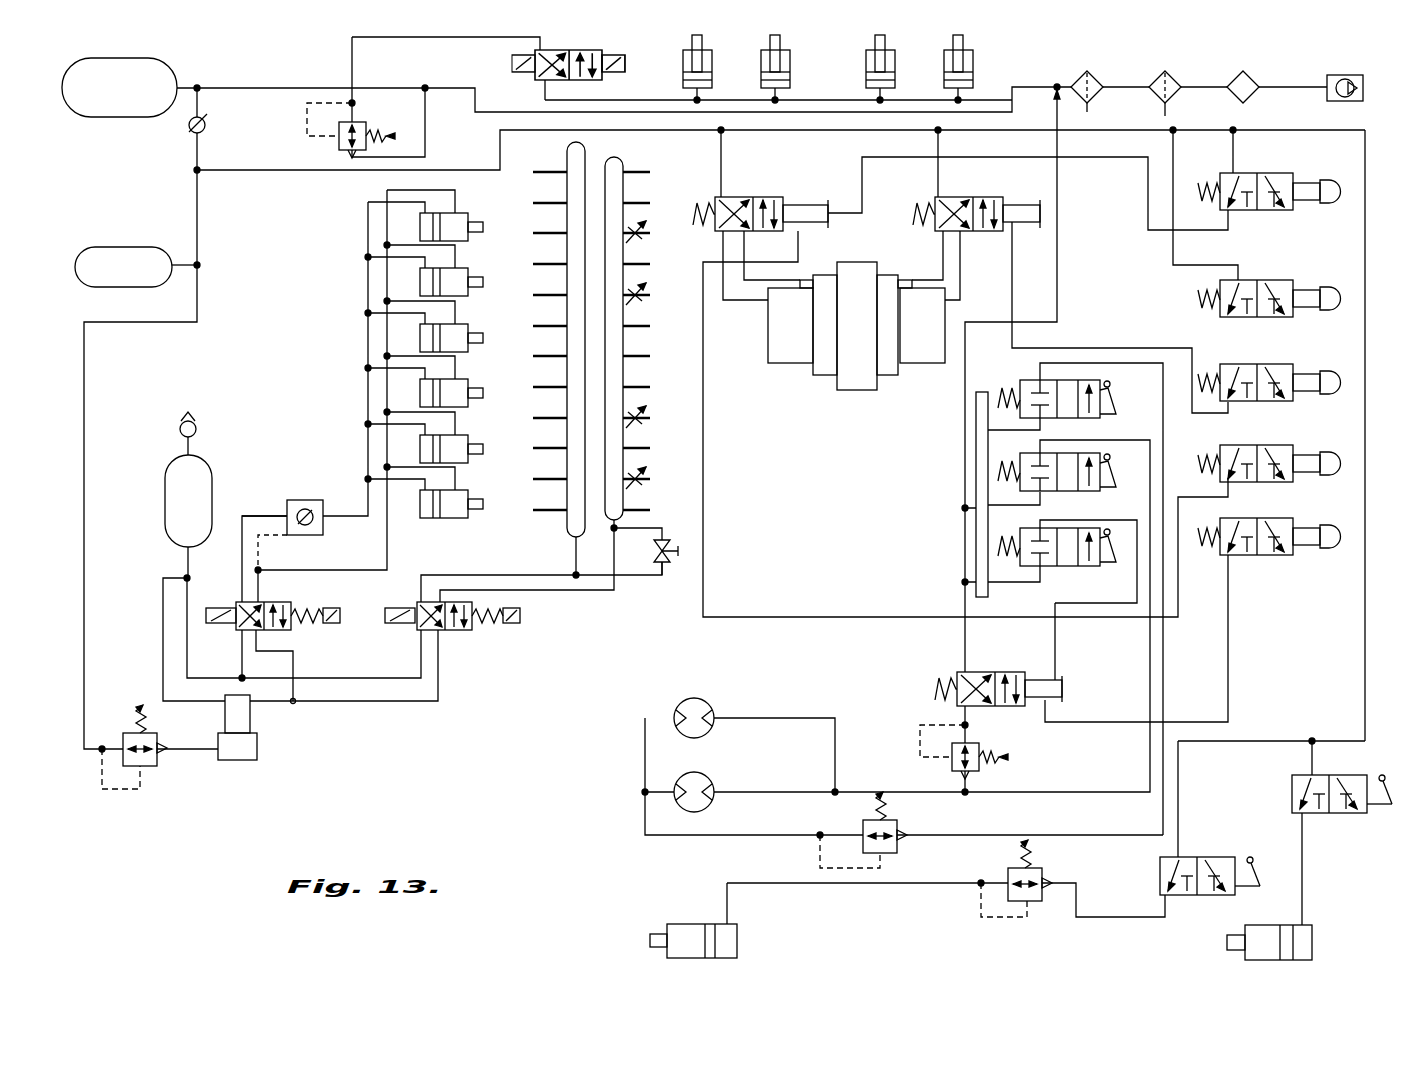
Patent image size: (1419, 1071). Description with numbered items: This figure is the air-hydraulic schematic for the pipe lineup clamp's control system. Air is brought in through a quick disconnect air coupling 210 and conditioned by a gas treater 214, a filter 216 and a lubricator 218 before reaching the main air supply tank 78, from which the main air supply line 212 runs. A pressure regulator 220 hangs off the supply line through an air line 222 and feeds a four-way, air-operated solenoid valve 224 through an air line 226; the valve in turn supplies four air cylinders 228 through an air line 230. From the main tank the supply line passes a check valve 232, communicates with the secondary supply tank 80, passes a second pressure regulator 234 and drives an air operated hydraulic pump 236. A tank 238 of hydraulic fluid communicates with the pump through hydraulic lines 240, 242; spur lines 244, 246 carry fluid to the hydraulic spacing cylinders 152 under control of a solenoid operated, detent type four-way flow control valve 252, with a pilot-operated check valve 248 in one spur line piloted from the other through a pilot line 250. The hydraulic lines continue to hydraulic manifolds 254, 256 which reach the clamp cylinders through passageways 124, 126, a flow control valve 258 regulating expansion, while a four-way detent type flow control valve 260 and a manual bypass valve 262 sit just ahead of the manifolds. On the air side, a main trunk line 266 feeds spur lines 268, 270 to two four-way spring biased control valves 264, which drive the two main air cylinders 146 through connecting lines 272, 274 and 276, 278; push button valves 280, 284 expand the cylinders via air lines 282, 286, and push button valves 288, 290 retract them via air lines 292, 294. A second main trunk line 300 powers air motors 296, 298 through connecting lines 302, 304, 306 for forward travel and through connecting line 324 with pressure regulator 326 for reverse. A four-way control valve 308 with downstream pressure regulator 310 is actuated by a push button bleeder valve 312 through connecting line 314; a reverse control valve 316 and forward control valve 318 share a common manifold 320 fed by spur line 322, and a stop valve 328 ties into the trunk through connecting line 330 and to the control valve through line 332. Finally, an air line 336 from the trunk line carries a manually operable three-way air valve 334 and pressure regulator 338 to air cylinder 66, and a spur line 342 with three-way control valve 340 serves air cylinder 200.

The main air supply tank 78 is at (138, 58).
The secondary supply tank 80 is at (120, 247).
The check valve 232 is at (207, 118).
The main air supply line 212 is at (86, 428).
The air line 226 is at (458, 37).
The pressure regulator 220 is at (359, 120).
The air line 222 is at (426, 131).
The four-way air-operated solenoid valve 224 is at (580, 54).
The air line 230 is at (605, 100).
The air cylinders 228 is at (712, 65).
The lubricator 218 is at (1074, 76).
The filter 216 is at (1157, 76).
The gas treater 214 is at (1226, 76).
The quick disconnect air coupling 210 is at (1340, 76).
The main trunk line 266 is at (792, 132).
The air line 336 is at (1365, 549).
The spur line 268 is at (734, 197).
The four-way air actuated spring biased control valve 264 is at (780, 197).
The spur line 270 is at (961, 147).
The connecting line 272 is at (754, 304).
The connecting line 274 is at (756, 280).
The connecting line 276 is at (940, 263).
The connecting line 278 is at (962, 262).
The air line 294 is at (705, 573).
The main air cylinders 146 is at (797, 364).
The main trunk line 300 is at (1057, 253).
The air line 282 is at (1087, 158).
The three-way spring biased button valve 280 is at (1254, 173).
The air line 286 is at (1178, 246).
The three-way spring biased push button control valve 284 is at (1264, 280).
The spring biased three-way push button valve 288 is at (1263, 364).
The spring biased three-way push button valve 290 is at (1268, 445).
The push button bleeder valve 312 is at (1271, 518).
The air line 292 is at (1071, 348).
The connecting line 314 is at (1234, 625).
The common manifold 320 is at (976, 466).
The spur line 322 is at (964, 513).
The reverse control valve 316 is at (1096, 419).
The forward control valve 318 is at (1091, 493).
The stop valve 328 is at (1083, 567).
The connecting line 330 is at (1004, 586).
The line 332 is at (1057, 639).
The four-way air actuated control valve 308 is at (989, 672).
The pressure regulator 310 is at (980, 738).
The air motor 296 is at (712, 706).
The air motor 298 is at (711, 782).
The connecting line 304 is at (798, 718).
The connecting line 306 is at (763, 796).
The connecting line 302 is at (850, 786).
The connecting line 324 is at (1052, 836).
The pressure regulator 326 is at (897, 841).
The air cylinder 66 is at (748, 925).
The pressure regulator 338 is at (1028, 918).
The manually operable three-way air valve 334 is at (1185, 857).
The spur line 342 is at (1313, 759).
The manually operable three-way control valve 340 is at (1326, 816).
The air cylinder 200 is at (1316, 927).
The second pressure regulator 234 is at (156, 766).
The air operated hydraulic pump 236 is at (257, 738).
The tank 238 is at (212, 481).
The hydraulic line 240 is at (191, 598).
The hydraulic line 242 is at (160, 609).
The spur line 244 is at (243, 548).
The spur line 246 is at (340, 572).
The pilot line 250 is at (264, 559).
The pilot-operated check valve 248 is at (292, 500).
The solenoid operated detent type four-way flow control valve 252 is at (278, 602).
The solenoid actuated four-way detent type flow control valve 260 is at (466, 633).
The manual bypass valve 262 is at (662, 578).
The hydraulic manifold 254 is at (627, 171).
The hydraulic manifold 256 is at (584, 156).
The passageway 126 is at (548, 158).
The passageway 124 is at (646, 176).
The flow control valve 258 is at (646, 226).
The hydraulic spacing cylinders 152 is at (468, 241).